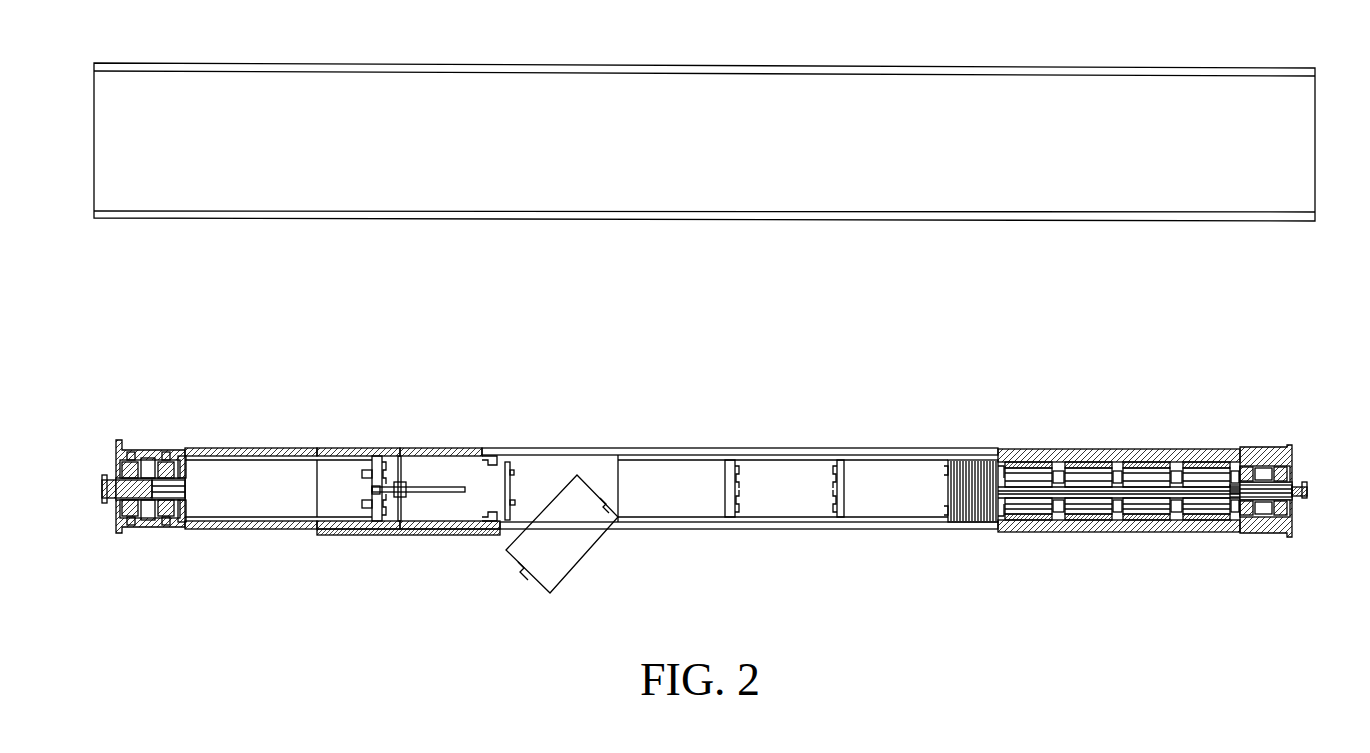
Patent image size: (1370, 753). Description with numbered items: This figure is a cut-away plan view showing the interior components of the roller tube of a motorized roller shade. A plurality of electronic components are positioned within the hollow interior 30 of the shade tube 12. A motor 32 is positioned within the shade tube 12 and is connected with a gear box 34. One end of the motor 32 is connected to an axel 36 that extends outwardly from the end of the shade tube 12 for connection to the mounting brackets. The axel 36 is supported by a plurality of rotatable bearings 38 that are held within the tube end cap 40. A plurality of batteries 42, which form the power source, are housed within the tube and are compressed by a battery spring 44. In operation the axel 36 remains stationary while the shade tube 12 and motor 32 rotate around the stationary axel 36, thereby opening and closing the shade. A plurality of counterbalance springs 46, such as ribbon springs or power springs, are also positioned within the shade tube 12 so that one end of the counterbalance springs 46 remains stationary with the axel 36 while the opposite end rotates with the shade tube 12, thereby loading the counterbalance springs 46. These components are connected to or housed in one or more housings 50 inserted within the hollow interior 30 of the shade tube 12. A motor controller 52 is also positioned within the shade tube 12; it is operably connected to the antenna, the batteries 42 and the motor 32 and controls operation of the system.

The shade tube 12 is at (860, 66).
The hollow interior 30 is at (720, 149).
The motor 32 is at (228, 470).
The gear box 34 is at (345, 470).
The axel 36 is at (106, 477).
The rotatable bearings 38 is at (162, 527).
The tube end cap 40 is at (156, 455).
The batteries 42 is at (556, 500).
The battery spring 44 is at (988, 462).
The counterbalance springs 46 is at (1030, 462).
The housing 50 is at (922, 448).
The motor controller 52 is at (430, 470).